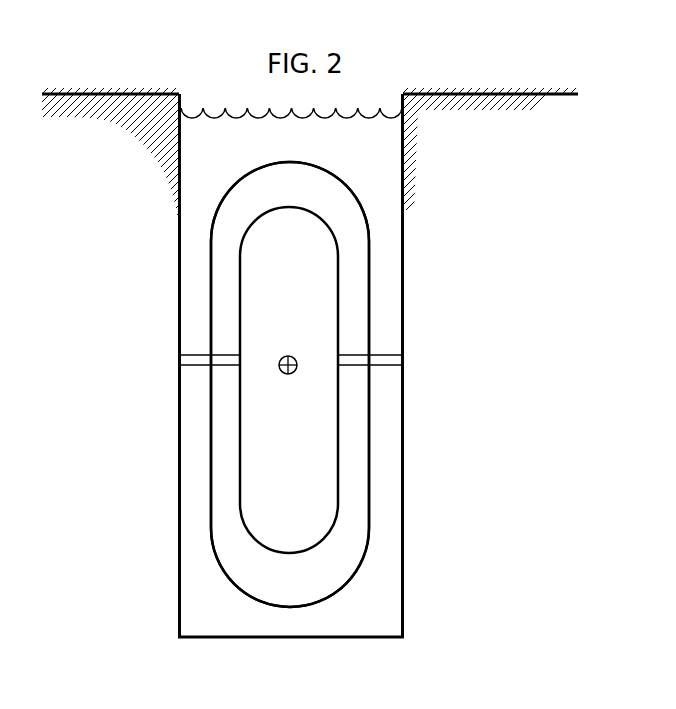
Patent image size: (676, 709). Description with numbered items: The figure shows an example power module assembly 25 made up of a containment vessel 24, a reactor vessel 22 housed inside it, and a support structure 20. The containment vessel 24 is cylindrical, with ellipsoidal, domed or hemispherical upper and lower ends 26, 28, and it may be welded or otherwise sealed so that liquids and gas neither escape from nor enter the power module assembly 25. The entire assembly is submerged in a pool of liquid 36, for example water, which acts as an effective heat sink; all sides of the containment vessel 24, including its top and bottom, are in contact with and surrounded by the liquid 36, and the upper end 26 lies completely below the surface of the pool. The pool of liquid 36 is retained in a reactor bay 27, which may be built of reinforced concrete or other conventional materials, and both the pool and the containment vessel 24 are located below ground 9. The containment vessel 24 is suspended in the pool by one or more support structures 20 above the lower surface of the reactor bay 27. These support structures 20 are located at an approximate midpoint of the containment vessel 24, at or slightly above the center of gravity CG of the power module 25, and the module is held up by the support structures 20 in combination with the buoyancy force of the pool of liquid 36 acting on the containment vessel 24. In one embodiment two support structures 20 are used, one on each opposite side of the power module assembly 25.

The ground 9 is at (555, 103).
The pool of liquid 36 is at (253, 146).
The reactor bay 27 is at (222, 365).
The power module assembly 25 is at (205, 247).
The upper end 26 is at (349, 190).
The containment vessel 24 is at (356, 384).
The lower end 28 is at (336, 567).
The reactor vessel 22 is at (370, 378).
The support structure 20 is at (188, 345).
The center of gravity CG is at (292, 385).